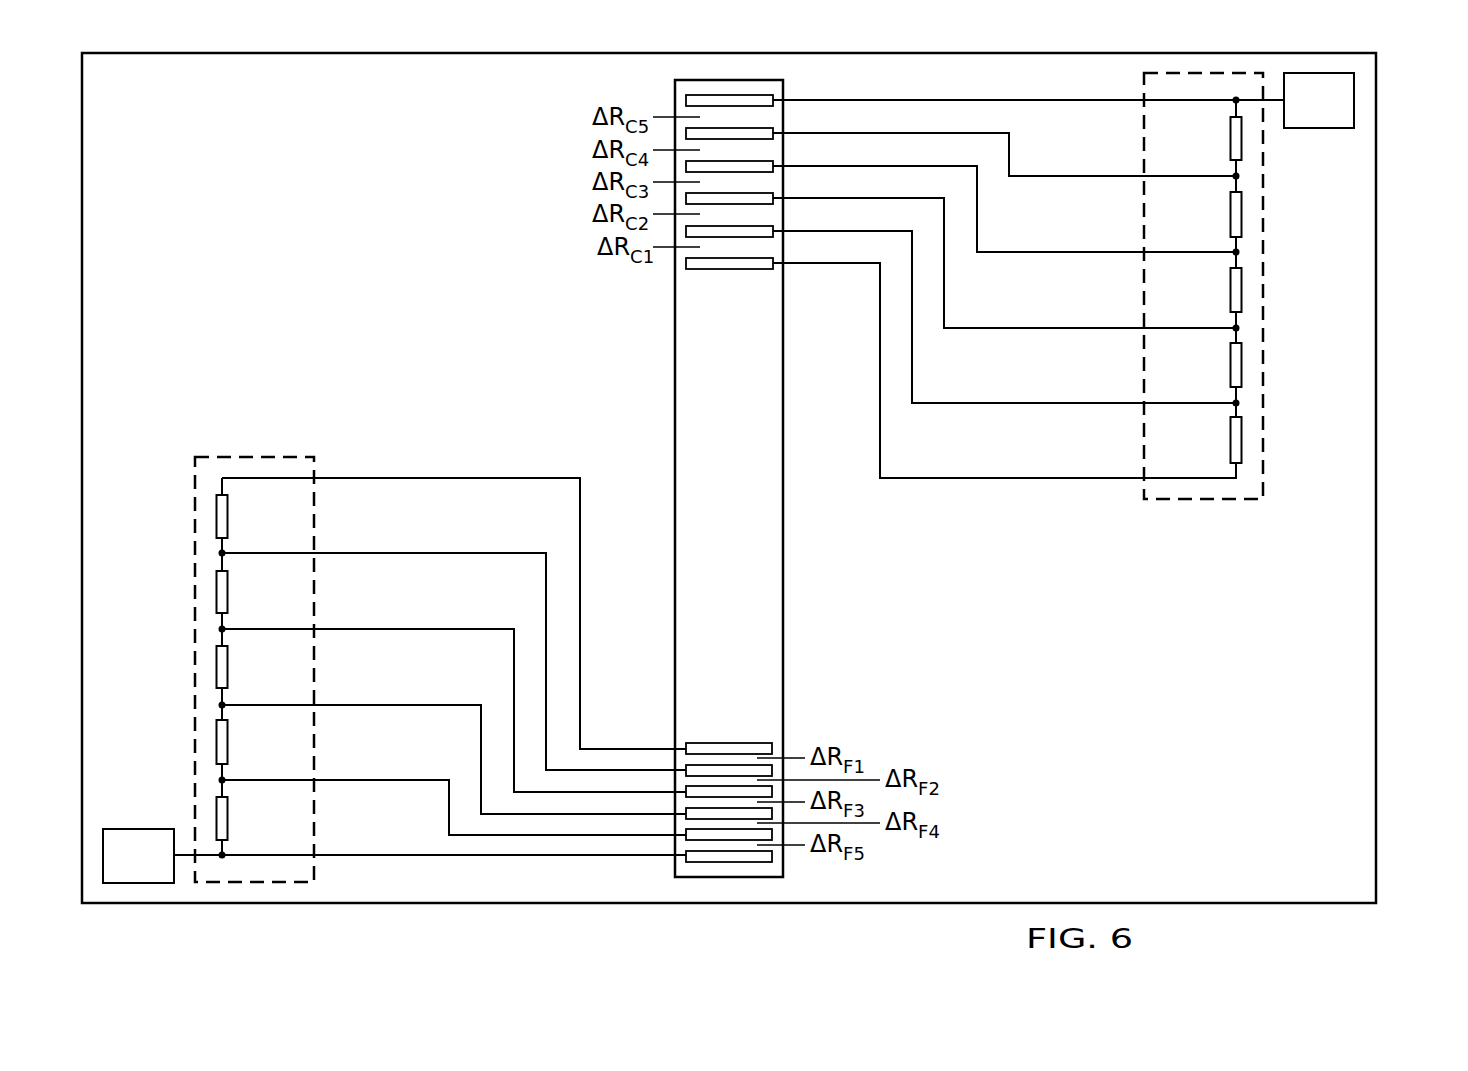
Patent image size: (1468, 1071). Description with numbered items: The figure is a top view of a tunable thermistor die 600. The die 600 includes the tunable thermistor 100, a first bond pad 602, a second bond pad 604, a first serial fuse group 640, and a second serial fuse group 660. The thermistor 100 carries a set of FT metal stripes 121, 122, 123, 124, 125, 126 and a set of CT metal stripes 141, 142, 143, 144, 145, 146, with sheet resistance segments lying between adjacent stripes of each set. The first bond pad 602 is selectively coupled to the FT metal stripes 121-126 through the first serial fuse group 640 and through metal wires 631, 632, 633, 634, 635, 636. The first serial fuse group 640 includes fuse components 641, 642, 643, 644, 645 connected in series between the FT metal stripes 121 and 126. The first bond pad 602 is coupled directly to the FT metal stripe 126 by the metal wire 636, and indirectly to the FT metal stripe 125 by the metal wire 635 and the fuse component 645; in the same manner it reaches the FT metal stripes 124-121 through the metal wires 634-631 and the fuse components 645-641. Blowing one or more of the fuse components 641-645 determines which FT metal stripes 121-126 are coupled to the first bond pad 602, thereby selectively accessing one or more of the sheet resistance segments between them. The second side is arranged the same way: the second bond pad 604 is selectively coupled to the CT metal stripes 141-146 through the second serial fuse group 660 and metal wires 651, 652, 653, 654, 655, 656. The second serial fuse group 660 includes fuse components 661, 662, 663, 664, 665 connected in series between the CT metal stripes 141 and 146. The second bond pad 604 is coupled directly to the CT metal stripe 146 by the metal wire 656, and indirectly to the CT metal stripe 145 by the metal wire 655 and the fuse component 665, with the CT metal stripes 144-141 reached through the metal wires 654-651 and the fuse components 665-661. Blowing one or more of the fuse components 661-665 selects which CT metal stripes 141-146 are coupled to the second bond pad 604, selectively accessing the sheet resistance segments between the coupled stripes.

The tunable thermistor 100 is at (708, 493).
The FT metal stripe 121 is at (723, 742).
The FT metal stripe 122 is at (717, 764).
The FT metal stripe 123 is at (740, 785).
The FT metal stripe 124 is at (737, 819).
The FT metal stripe 125 is at (690, 842).
The FT metal stripe 126 is at (717, 863).
The CT metal stripe 141 is at (757, 257).
The CT metal stripe 142 is at (757, 225).
The CT metal stripe 143 is at (757, 192).
The CT metal stripe 144 is at (757, 160).
The CT metal stripe 145 is at (757, 127).
The CT metal stripe 146 is at (757, 94).
The tunable thermistor die 600 is at (1377, 361).
The first bond pad 602 is at (118, 872).
The second bond pad 604 is at (1298, 115).
The metal wire 631 is at (386, 476).
The metal wire 632 is at (386, 552).
The metal wire 633 is at (386, 628).
The metal wire 634 is at (386, 704).
The metal wire 635 is at (386, 779).
The metal wire 636 is at (386, 855).
The first serial fuse group 640 is at (229, 457).
The fuse component 641 is at (228, 515).
The fuse component 642 is at (228, 591).
The fuse component 643 is at (228, 666).
The fuse component 644 is at (228, 742).
The fuse component 645 is at (228, 817).
The metal wire 651 is at (1073, 480).
The metal wire 652 is at (1073, 405).
The metal wire 653 is at (1073, 330).
The metal wire 654 is at (1073, 254).
The metal wire 655 is at (1073, 178).
The metal wire 656 is at (1073, 103).
The second serial fuse group 660 is at (1231, 501).
The fuse component 661 is at (1230, 440).
The fuse component 662 is at (1230, 365).
The fuse component 663 is at (1230, 290).
The fuse component 664 is at (1200, 212).
The fuse component 665 is at (1230, 140).